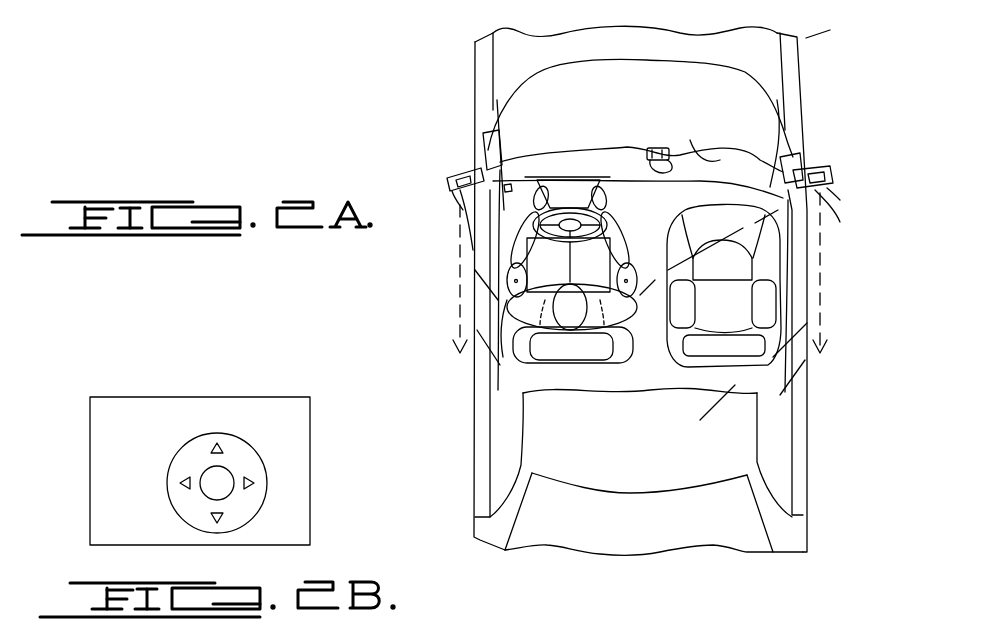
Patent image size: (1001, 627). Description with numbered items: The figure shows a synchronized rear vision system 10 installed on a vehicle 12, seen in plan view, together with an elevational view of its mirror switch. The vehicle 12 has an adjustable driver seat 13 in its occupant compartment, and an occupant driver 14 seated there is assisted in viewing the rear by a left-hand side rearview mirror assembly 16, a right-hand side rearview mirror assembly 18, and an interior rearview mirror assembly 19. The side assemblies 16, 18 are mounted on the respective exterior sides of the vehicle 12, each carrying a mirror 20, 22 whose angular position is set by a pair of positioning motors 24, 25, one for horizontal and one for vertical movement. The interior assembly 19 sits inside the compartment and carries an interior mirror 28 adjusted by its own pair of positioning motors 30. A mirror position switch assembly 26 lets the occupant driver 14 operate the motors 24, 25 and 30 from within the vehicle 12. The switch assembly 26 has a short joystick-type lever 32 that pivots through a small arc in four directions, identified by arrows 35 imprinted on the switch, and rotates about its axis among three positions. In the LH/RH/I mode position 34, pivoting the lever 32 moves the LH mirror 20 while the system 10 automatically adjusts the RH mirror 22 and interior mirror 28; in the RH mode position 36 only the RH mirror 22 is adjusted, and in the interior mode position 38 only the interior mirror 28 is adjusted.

In FIG. 2A, the synchronized rear vision system 10 is at (412, 137).
In FIG. 2A, the vehicle 12 is at (807, 73).
In FIG. 2A, the adjustable driver seat 13 is at (503, 357).
In FIG. 2A, the occupant driver 14 is at (597, 327).
In FIG. 2A, the left-hand side rearview mirror assembly 16 is at (467, 167).
In FIG. 2A, the right-hand side rearview mirror assembly 18 is at (807, 163).
In FIG. 2A, the interior rearview mirror assembly 19 is at (627, 147).
In FIG. 2A, the LH mirror 20 is at (458, 188).
In FIG. 2A, the RH mirror 22 is at (827, 188).
In FIG. 2A, the positioning motors 24 is at (447, 175).
In FIG. 2A, the positioning motors 25 is at (836, 174).
In FIG. 2A, the mirror position switch assembly 26 is at (505, 185).
In FIG. 2B, the mirror position switch assembly 26 is at (90, 480).
In FIG. 2A, the interior mirror 28 is at (690, 140).
In FIG. 2A, the positioning motors 30 is at (653, 150).
In FIG. 2B, the lever 32 is at (223, 490).
In FIG. 2B, the LH/RH/I mode position 34 is at (193, 465).
In FIG. 2B, the arrows 35 is at (217, 517).
In FIG. 2B, the RH mode position 36 is at (240, 462).
In FIG. 2B, the interior mode position 38 is at (217, 437).